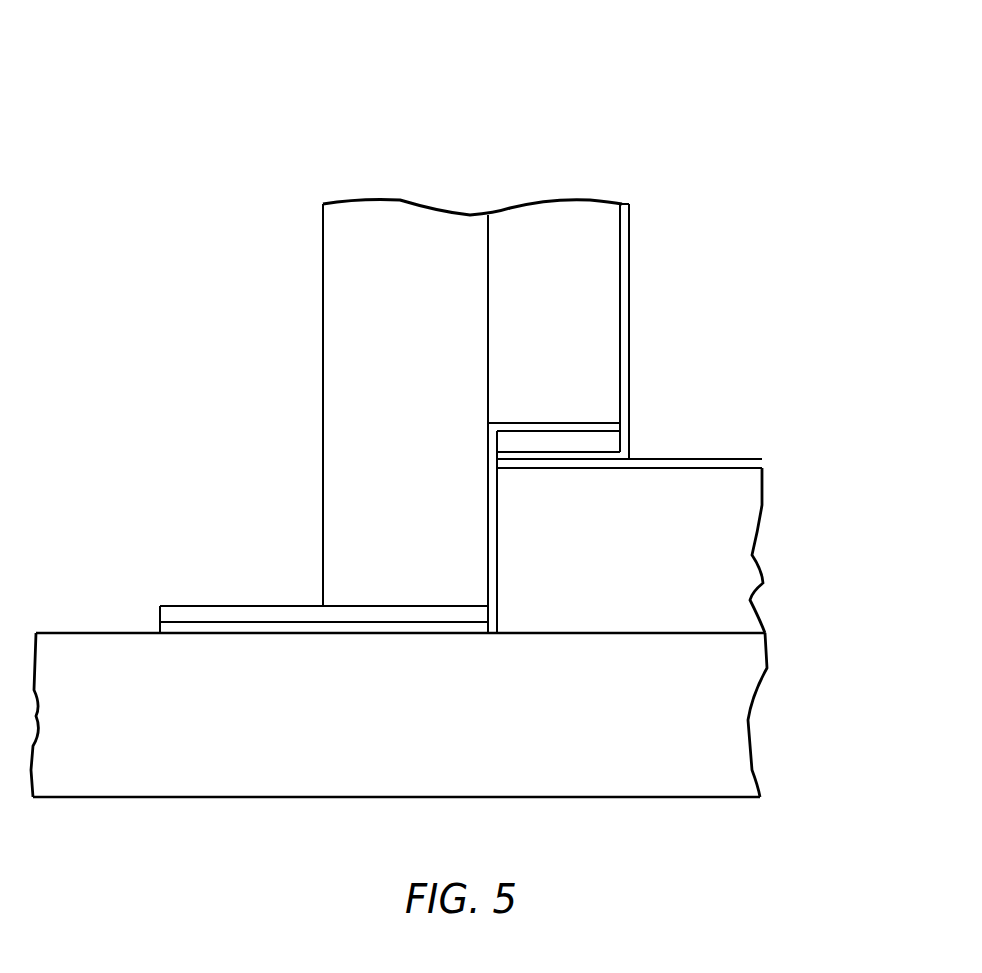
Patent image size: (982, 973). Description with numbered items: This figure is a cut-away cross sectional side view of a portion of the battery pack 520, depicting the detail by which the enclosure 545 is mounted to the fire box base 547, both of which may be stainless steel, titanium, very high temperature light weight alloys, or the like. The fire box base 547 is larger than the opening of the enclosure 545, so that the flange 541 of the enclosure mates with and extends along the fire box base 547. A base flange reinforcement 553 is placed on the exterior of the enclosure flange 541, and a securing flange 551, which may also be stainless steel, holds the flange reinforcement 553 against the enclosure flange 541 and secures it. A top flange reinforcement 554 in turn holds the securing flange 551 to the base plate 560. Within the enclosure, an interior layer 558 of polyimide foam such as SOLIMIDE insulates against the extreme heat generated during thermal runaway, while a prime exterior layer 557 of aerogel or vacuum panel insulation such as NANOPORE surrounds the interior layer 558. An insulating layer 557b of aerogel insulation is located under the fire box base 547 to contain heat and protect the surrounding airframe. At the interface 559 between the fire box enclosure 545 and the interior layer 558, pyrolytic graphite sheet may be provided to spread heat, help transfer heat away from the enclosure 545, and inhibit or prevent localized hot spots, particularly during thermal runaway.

The battery pack 520 is at (104, 242).
The base plate 560 is at (724, 711).
The top flange reinforcement 554 is at (208, 616).
The prime exterior layer 557 is at (400, 227).
The insulating layer 557b is at (723, 542).
The interior layer 558 is at (555, 227).
The interface 559 is at (623, 203).
The enclosure 545 is at (630, 243).
The securing flange 551 is at (490, 520).
The base flange reinforcement 553 is at (556, 440).
The flange 541 is at (572, 452).
The fire box base 547 is at (700, 463).